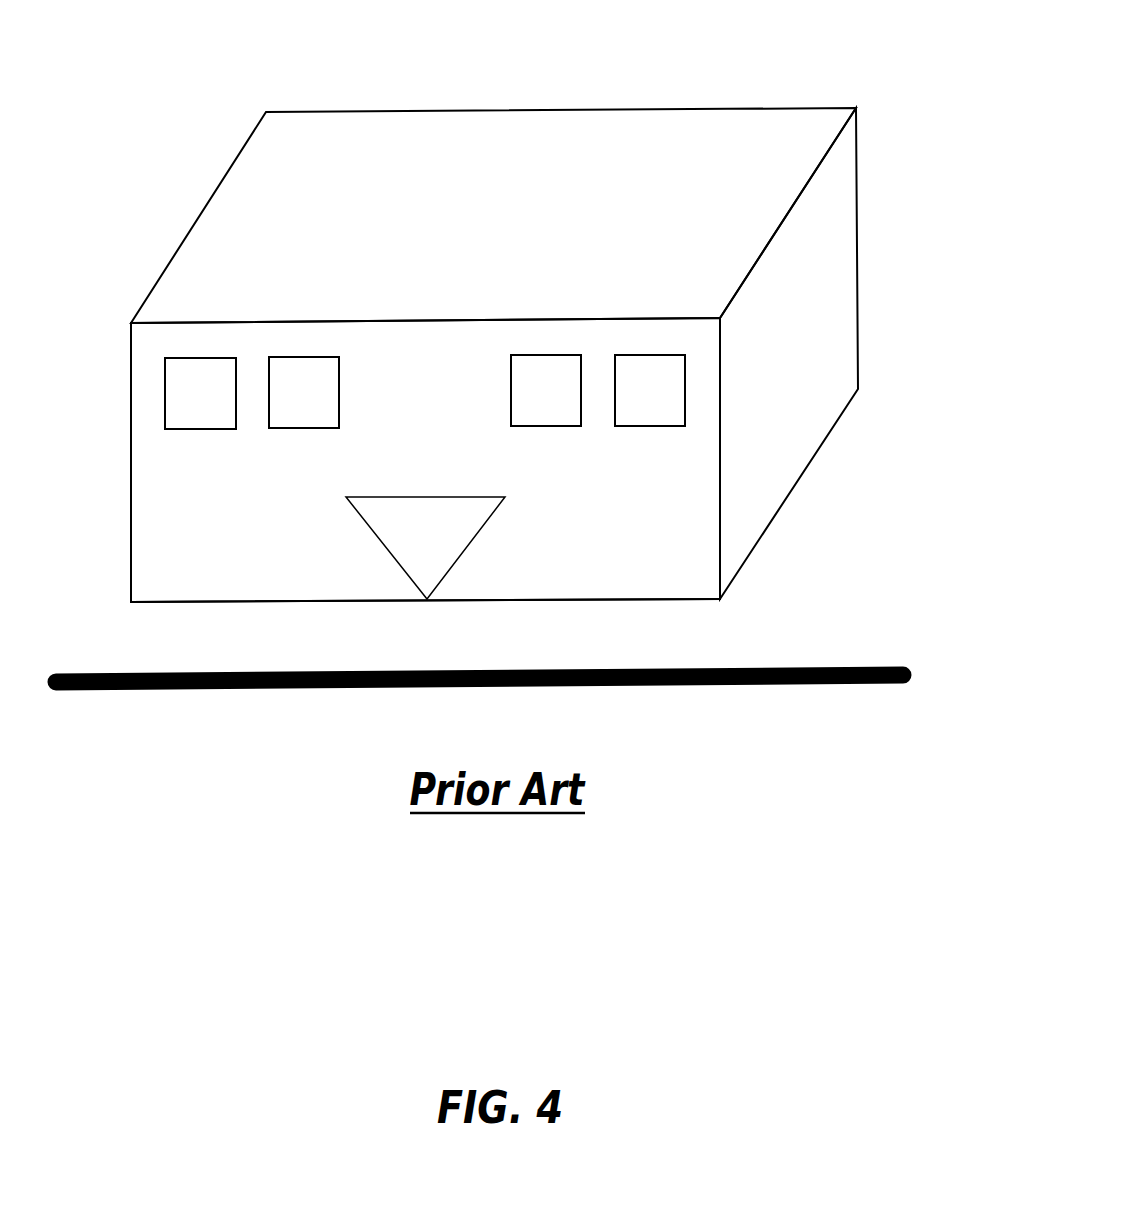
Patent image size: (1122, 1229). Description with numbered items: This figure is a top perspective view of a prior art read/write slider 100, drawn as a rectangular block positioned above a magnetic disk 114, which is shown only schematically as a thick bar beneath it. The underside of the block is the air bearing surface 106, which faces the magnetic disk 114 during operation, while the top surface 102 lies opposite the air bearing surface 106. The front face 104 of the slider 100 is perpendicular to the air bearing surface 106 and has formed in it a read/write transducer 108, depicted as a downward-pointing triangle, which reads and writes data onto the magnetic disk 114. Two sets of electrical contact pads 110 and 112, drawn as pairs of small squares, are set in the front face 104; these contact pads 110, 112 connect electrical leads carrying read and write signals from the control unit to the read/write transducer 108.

The read/write slider 100 is at (460, 336).
The top surface 102 is at (302, 165).
The front face 104 is at (163, 533).
The air bearing surface 106 is at (572, 601).
The read/write transducer 108 is at (487, 522).
The electrical contact pads 110 is at (208, 430).
The electrical contact pads 112 is at (550, 427).
The magnetic disk 114 is at (257, 692).